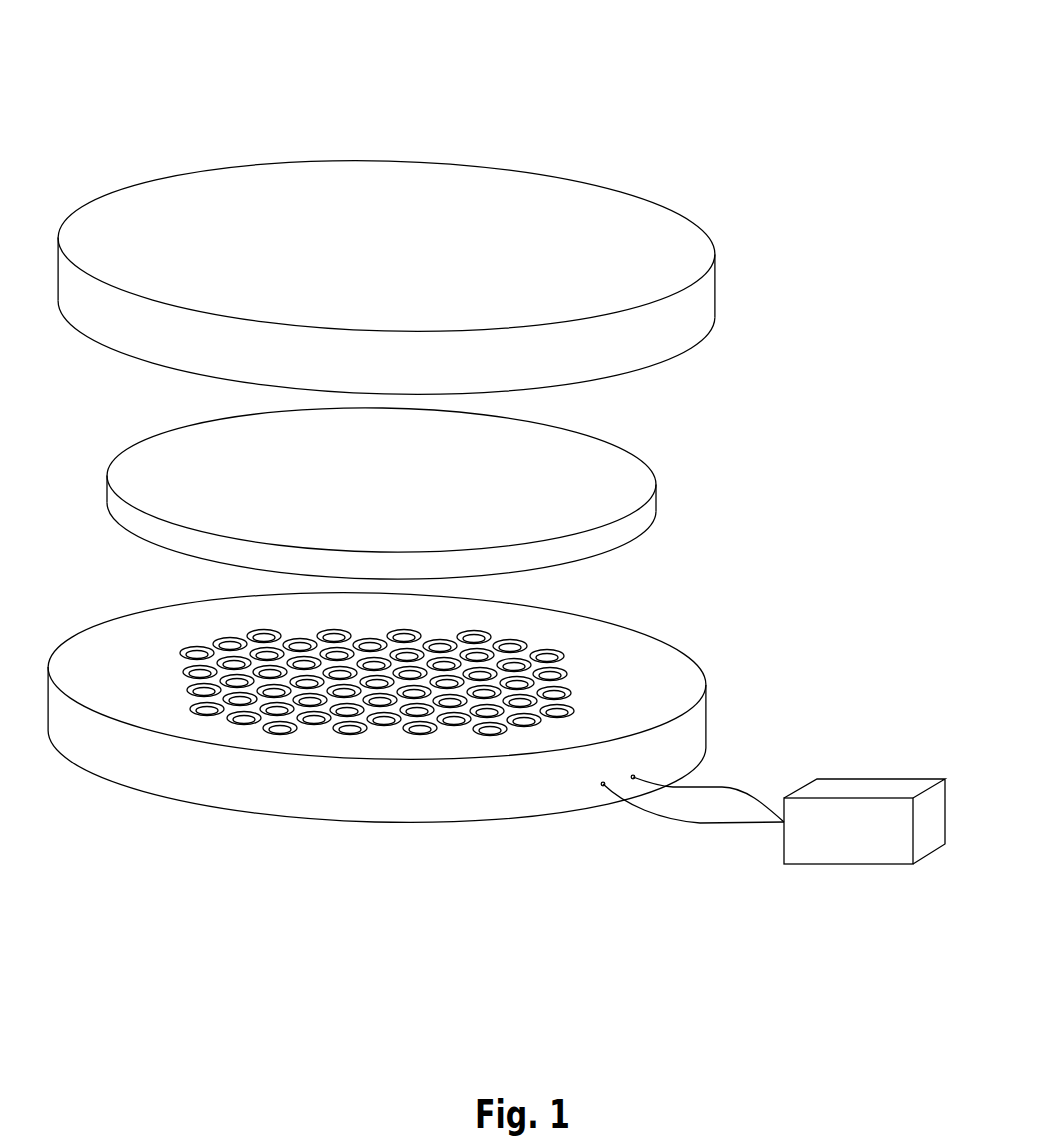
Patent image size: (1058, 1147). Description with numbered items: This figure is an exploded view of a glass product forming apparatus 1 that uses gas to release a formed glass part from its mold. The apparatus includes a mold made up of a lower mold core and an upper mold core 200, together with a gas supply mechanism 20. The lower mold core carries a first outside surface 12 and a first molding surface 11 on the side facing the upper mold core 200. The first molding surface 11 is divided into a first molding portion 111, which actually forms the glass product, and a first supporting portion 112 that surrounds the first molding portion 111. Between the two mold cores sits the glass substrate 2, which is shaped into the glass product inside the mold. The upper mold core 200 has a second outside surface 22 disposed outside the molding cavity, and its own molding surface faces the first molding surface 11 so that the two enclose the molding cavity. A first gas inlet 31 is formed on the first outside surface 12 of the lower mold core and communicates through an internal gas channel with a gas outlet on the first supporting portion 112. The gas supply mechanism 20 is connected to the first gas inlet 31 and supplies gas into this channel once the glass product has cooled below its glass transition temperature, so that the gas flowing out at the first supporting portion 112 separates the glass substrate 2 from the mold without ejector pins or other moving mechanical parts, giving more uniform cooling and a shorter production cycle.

The glass product forming apparatus 1 is at (546, 42).
The upper mold core 200 is at (463, 267).
The second outside surface 22 is at (678, 323).
The glass substrate 2 is at (595, 482).
The first molding surface 11 is at (499, 726).
The first supporting portion 112 is at (548, 622).
The first molding portion 111 is at (565, 672).
The first outside surface 12 is at (405, 803).
The first gas inlet 31 is at (635, 777).
The gas supply mechanism 20 is at (832, 853).